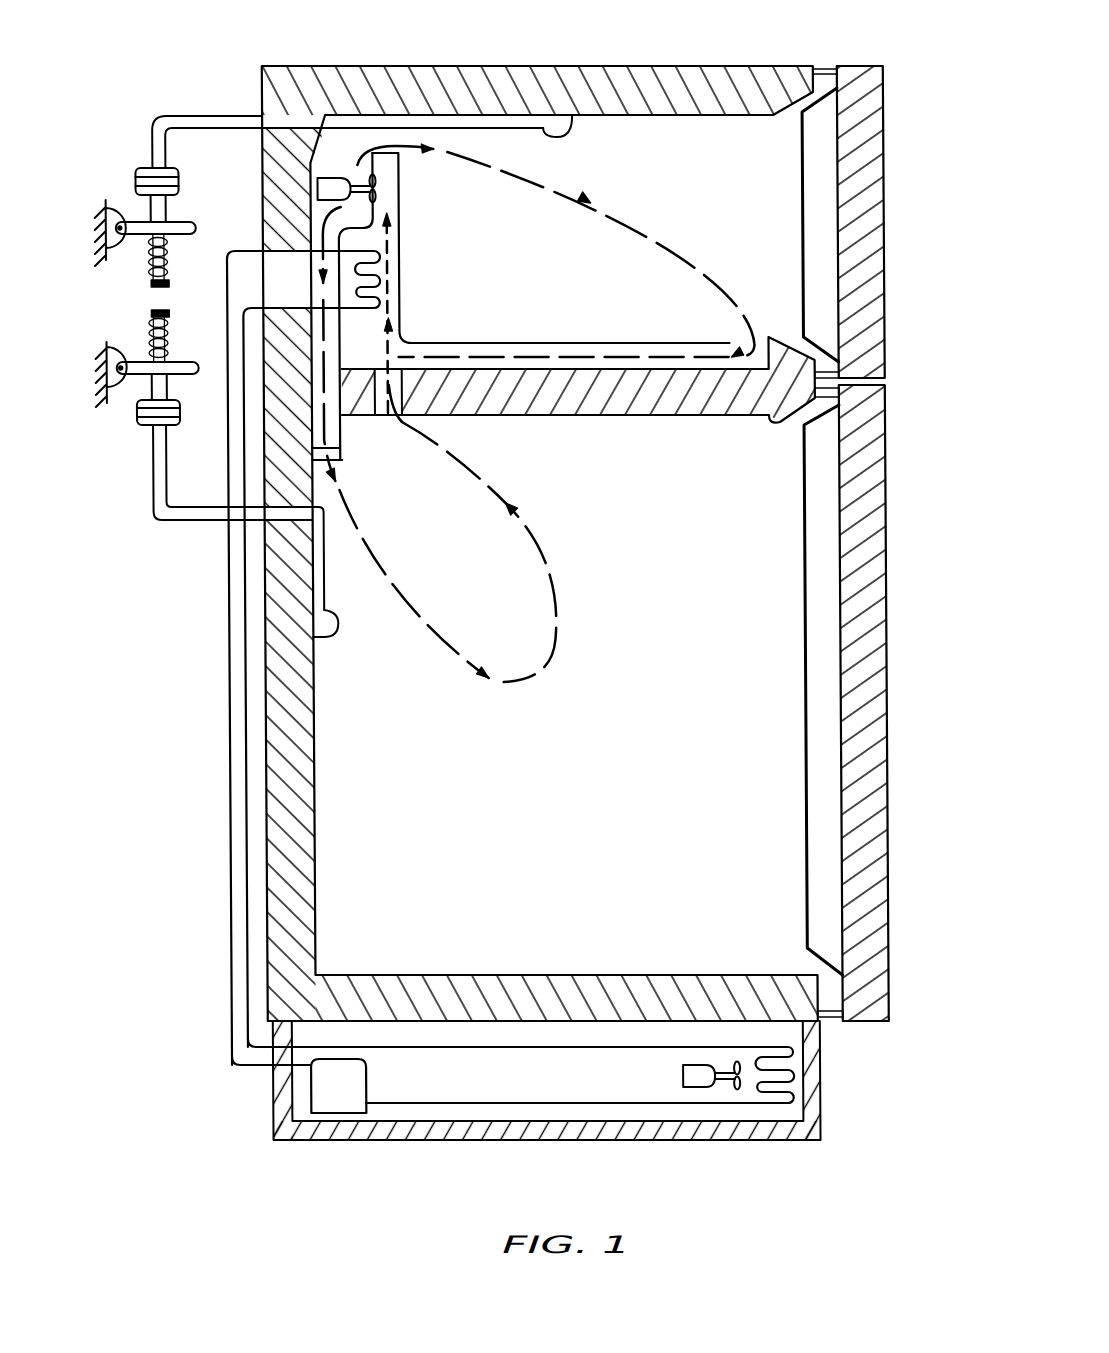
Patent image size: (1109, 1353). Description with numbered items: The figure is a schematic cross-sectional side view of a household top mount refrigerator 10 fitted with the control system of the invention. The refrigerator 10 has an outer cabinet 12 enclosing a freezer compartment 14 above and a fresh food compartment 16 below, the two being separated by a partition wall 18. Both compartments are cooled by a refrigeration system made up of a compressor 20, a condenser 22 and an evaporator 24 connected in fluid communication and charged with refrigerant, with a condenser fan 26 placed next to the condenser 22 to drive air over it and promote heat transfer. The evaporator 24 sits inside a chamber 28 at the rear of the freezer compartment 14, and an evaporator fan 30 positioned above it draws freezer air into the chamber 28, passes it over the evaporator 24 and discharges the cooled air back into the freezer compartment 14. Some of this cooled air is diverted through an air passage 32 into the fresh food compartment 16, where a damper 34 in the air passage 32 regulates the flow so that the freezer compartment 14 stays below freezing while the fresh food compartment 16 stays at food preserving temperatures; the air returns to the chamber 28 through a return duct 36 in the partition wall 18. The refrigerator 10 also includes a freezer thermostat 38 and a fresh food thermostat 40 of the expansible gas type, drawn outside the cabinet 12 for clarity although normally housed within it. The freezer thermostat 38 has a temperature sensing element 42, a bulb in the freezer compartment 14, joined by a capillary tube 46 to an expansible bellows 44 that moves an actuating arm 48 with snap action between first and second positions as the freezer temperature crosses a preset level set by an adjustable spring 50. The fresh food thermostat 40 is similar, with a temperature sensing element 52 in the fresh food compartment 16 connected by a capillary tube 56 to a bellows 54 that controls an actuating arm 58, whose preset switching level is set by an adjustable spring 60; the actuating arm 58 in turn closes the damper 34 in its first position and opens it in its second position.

The refrigerator 10 is at (885, 203).
The outer cabinet 12 is at (678, 66).
The freezer compartment 14 is at (760, 177).
The fresh food compartment 16 is at (740, 505).
The partition wall 18 is at (612, 415).
The compressor 20 is at (361, 1082).
The condenser 22 is at (787, 1076).
The evaporator 24 is at (379, 272).
The condenser fan 26 is at (735, 1088).
The chamber 28 is at (405, 305).
The evaporator fan 30 is at (376, 180).
The air passage 32 is at (340, 425).
The damper 34 is at (349, 354).
The return duct 36 is at (402, 421).
The freezer thermostat 38 is at (193, 95).
The fresh food thermostat 40 is at (193, 545).
The temperature sensing element 42 is at (552, 115).
The bellows 44 is at (137, 176).
The capillary tube 46 is at (226, 114).
The actuating arm 48 is at (185, 222).
The adjustable spring 50 is at (168, 270).
The temperature sensing element 52 is at (333, 630).
The bellows 54 is at (137, 413).
The capillary tube 56 is at (197, 505).
The actuating arm 58 is at (186, 362).
The adjustable spring 60 is at (150, 314).